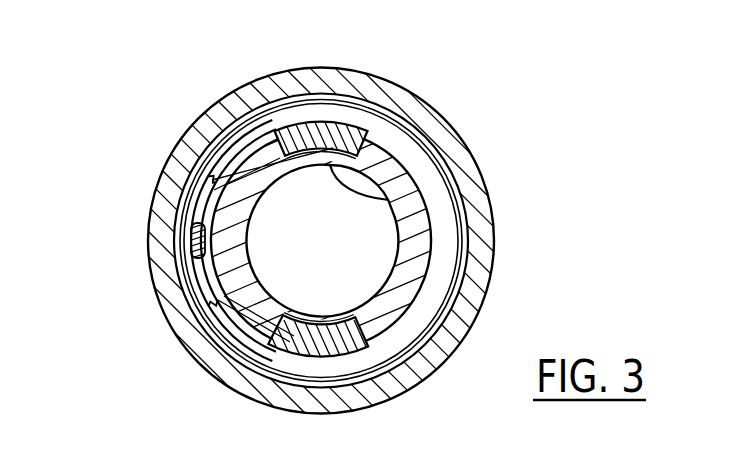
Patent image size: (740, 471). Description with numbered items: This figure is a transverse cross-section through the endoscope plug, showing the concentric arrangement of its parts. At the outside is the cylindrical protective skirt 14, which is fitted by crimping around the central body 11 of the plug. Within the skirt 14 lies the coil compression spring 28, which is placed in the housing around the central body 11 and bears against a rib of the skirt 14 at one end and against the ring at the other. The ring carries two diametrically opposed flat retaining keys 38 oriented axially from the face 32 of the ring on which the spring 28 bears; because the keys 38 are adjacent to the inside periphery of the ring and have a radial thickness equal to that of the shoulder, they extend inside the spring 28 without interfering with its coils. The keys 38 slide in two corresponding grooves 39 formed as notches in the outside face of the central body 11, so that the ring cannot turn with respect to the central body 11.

The central body 11 is at (415, 255).
The cylindrical protective skirt 14 is at (240, 105).
The coil compression spring 28 is at (196, 245).
The face of the ring 32 is at (333, 110).
The flat retaining keys 38 is at (365, 128).
The grooves 39 is at (388, 186).